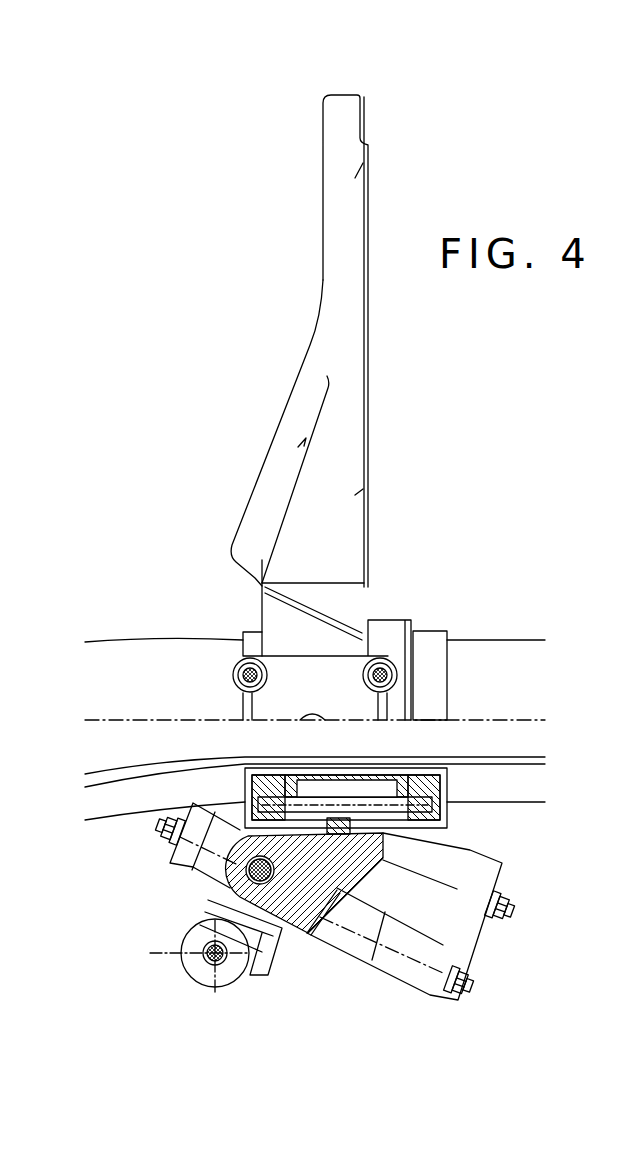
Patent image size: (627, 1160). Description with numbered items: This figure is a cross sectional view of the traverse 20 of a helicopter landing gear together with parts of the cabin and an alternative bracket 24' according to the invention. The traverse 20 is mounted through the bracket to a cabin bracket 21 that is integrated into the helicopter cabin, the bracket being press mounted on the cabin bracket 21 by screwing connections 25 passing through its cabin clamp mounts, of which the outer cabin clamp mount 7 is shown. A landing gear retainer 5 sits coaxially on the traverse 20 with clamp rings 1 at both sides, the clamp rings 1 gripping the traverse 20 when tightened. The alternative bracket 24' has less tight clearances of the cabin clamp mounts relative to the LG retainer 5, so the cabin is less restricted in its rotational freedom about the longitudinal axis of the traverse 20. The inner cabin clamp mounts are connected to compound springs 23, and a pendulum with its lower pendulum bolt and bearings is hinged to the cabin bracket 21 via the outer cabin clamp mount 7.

The cabin bracket 21 is at (350, 465).
The alternative bracket 24' is at (507, 480).
The screwing connections 25 is at (400, 676).
The traverse 20 is at (512, 650).
The outer cabin clamp mount 7 is at (285, 675).
The clamp rings 1 is at (262, 768).
The landing gear (LG) retainer 5 is at (340, 768).
The compound springs 23 is at (350, 942).